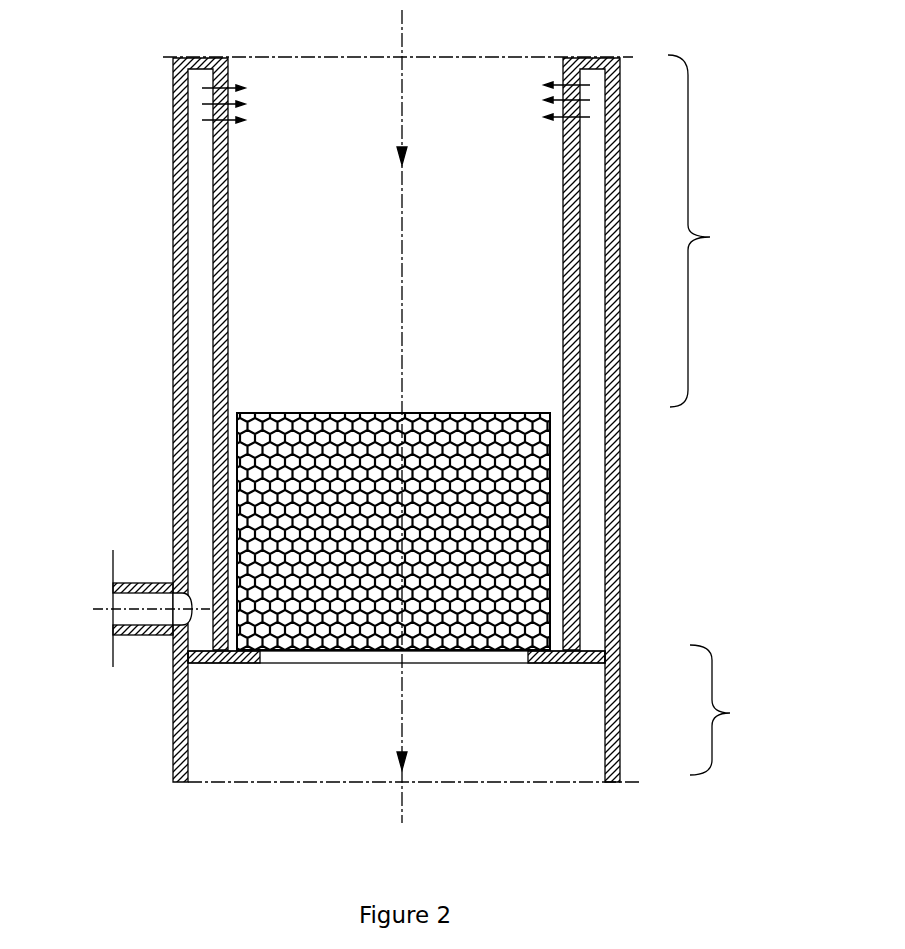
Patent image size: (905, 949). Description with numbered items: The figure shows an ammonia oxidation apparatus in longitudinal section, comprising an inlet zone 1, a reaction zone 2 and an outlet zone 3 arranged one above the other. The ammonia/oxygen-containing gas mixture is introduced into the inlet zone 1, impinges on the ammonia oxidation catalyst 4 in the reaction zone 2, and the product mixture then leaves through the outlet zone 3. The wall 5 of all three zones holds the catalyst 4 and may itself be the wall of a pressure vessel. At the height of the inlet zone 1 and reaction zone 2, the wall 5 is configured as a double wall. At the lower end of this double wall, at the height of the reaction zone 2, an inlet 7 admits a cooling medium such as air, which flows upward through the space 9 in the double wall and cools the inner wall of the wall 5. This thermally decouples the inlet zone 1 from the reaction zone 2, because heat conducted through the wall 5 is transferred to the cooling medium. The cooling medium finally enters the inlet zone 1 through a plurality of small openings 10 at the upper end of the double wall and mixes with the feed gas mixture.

The inlet zone 1 is at (719, 231).
The reaction zone 2 is at (692, 407).
The outlet zone 3 is at (739, 710).
The ammonia oxidation catalyst 4 is at (417, 650).
The wall 5 is at (228, 217).
The inlet 7 is at (111, 608).
The space 9 is at (200, 342).
The small openings 10 is at (401, 416).